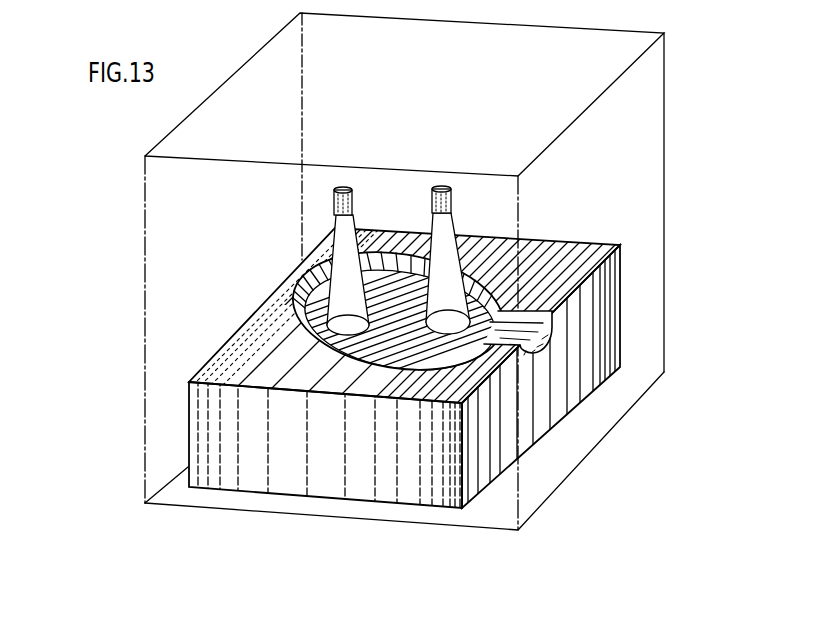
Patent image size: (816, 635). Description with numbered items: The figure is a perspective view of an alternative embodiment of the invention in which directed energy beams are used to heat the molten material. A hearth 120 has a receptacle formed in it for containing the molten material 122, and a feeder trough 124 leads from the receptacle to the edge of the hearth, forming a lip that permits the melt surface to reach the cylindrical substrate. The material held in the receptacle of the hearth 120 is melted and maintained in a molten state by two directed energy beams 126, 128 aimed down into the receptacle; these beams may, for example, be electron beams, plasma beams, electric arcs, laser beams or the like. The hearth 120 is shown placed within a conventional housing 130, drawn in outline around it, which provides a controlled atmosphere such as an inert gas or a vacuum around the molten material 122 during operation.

The hearth 120 is at (254, 423).
The molten material 122 is at (353, 353).
The feeder trough 124 is at (553, 313).
The directed energy beam 126 is at (343, 253).
The directed energy beam 128 is at (445, 252).
The housing 130 is at (590, 453).